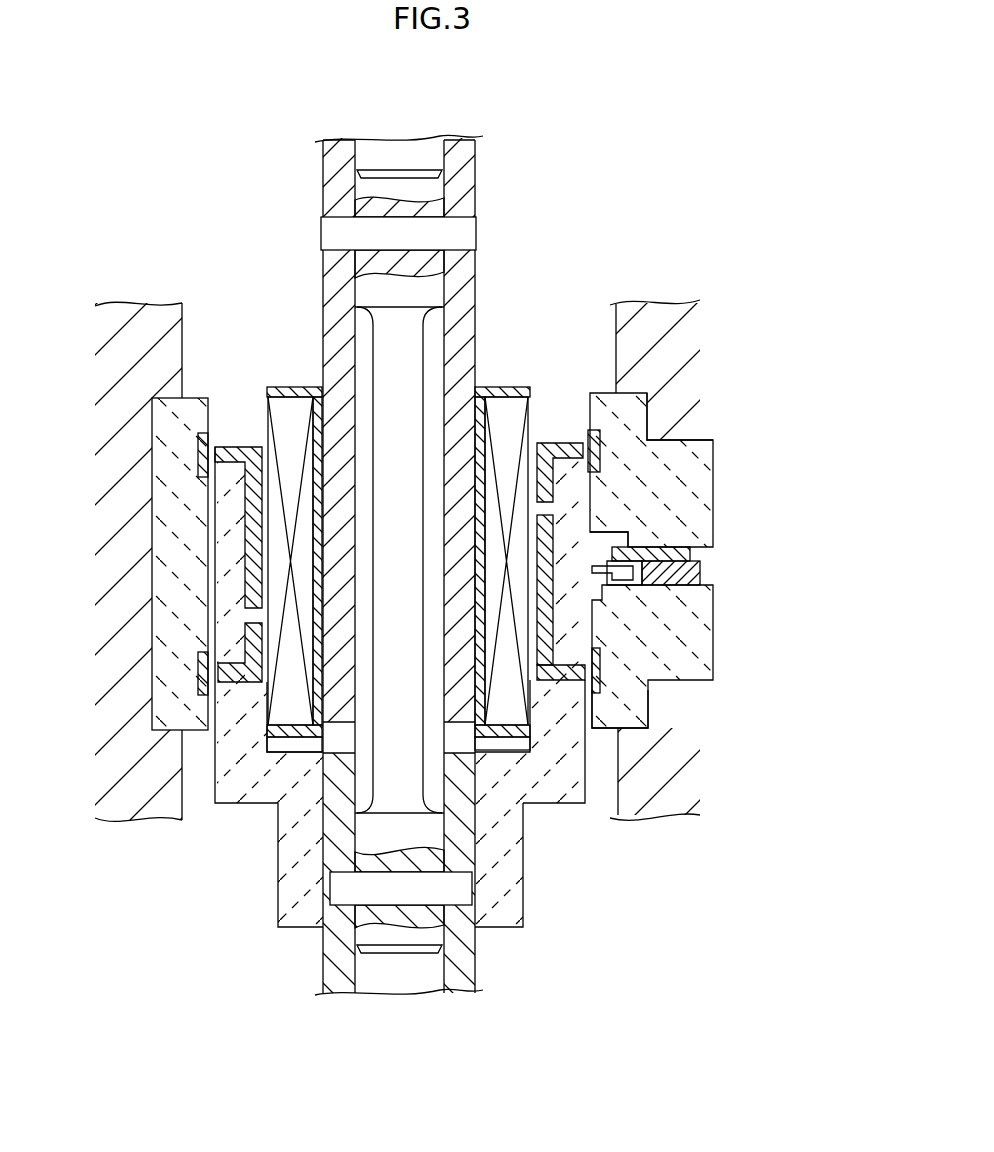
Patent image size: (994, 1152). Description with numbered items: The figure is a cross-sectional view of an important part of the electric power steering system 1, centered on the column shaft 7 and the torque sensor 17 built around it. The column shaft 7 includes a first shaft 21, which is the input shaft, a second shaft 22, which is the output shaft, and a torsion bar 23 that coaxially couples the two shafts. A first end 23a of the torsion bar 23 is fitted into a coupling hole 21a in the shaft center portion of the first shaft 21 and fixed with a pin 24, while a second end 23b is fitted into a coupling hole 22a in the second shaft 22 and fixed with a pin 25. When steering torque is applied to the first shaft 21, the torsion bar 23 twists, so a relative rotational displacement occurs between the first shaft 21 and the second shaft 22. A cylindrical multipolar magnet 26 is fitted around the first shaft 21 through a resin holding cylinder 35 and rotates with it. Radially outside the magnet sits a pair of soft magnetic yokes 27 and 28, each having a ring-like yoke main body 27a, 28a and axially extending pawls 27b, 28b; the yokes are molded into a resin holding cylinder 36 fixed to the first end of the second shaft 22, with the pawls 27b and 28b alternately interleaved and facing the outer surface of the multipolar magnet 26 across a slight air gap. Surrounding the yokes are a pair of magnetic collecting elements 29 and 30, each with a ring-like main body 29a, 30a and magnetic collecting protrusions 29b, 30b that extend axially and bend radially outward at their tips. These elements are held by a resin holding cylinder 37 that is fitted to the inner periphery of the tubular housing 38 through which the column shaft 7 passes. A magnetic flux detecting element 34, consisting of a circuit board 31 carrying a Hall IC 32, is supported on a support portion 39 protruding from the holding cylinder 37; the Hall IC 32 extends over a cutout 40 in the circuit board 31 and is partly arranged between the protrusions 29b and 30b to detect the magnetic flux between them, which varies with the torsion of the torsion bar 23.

The electric power steering system 1 is at (603, 125).
The column shaft 7 is at (484, 142).
The torque sensor 17 is at (625, 204).
The first shaft 21 is at (460, 176).
The coupling hole 21a is at (444, 166).
The second shaft 22 is at (485, 965).
The coupling hole 22a is at (446, 968).
The torsion bar 23 is at (415, 333).
The first end 23a is at (368, 291).
The second end 23b is at (368, 832).
The pin 24 is at (470, 238).
The pin 25 is at (352, 878).
The multipolar magnet 26 is at (267, 420).
The magnetic yoke 27 is at (556, 438).
The yoke main body 27a is at (226, 445).
The pawls 27b is at (233, 515).
The magnetic yoke 28 is at (243, 690).
The yoke main body 28a is at (568, 682).
The pawls 28b is at (545, 622).
The magnetic collecting element 29 is at (198, 455).
The magnetic collecting element main body 29a is at (594, 432).
The magnetic collecting protrusion 29b is at (615, 535).
The magnetic collecting element 30 is at (198, 678).
The magnetic collecting element main body 30a is at (600, 680).
The magnetic collecting protrusion 30b is at (615, 588).
The circuit board 31 is at (712, 581).
The Hall IC 32 is at (673, 552).
The magnetic flux detecting element 34 is at (724, 554).
The holding cylinder 35 is at (284, 387).
The holding cylinder 36 is at (232, 604).
The holding cylinder 37 is at (165, 560).
The housing 38 is at (630, 310).
The support portion 39 is at (660, 440).
The cutout 40 is at (630, 583).